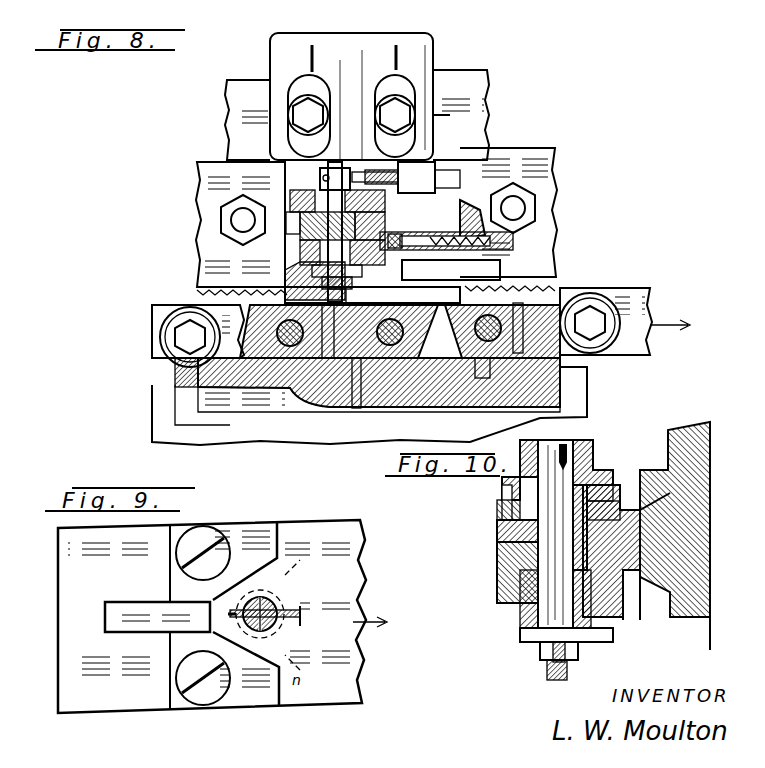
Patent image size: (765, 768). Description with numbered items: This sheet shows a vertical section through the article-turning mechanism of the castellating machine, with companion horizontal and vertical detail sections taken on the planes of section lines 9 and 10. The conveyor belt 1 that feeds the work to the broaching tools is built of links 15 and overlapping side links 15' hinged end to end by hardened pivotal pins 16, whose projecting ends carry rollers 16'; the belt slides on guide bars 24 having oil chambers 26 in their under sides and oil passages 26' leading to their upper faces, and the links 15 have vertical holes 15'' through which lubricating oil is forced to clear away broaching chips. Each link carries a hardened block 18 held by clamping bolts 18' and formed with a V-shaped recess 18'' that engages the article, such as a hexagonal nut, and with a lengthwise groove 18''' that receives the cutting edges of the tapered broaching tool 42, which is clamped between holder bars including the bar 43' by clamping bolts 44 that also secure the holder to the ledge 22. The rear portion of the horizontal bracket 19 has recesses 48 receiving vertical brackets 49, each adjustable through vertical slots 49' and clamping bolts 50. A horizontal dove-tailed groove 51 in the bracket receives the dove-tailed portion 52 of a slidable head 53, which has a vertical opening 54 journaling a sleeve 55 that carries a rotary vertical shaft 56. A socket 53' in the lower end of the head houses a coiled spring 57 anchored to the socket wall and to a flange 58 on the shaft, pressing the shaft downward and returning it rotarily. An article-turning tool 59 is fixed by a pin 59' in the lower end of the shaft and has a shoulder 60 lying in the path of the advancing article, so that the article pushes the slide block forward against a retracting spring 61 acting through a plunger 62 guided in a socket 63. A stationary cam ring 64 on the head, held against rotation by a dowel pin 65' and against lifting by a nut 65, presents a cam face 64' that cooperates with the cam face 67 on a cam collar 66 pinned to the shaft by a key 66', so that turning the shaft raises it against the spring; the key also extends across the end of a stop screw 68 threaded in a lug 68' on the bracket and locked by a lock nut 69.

In FIG. 8, the conveyor belt 1 is at (158, 345).
In FIG. 9, the conveyor belt 1 is at (283, 525).
In FIG. 8, the base casting 9 is at (315, 281).
In FIG. 8, the pin 10 is at (345, 446).
In FIG. 8, the links 15 is at (336, 381).
In FIG. 9, the links 15 is at (212, 629).
In FIG. 8, the links 15' is at (426, 364).
In FIG. 8, the vertical holes 15'' is at (412, 384).
In FIG. 8, the pivotal pins 16 is at (385, 375).
In FIG. 8, the rollers 16' is at (365, 301).
In FIG. 8, the block 18 is at (352, 284).
In FIG. 9, the block 18 is at (218, 633).
In FIG. 9, the clamping bolts 18' is at (204, 617).
In FIG. 8, the V-shaped recess 18'' is at (582, 263).
In FIG. 9, the V-shaped recess 18'' is at (273, 615).
In FIG. 8, the lengthwise groove 18''' is at (528, 271).
In FIG. 9, the lengthwise groove 18''' is at (157, 605).
In FIG. 8, the horizontally extending bracket 19 is at (470, 76).
In FIG. 8, the ledge 22 is at (445, 412).
In FIG. 8, the guide bars 24 is at (385, 345).
In FIG. 8, the oil chambers 26 is at (369, 411).
In FIG. 8, the oil passages 26' is at (301, 409).
In FIG. 8, the broaching tool 42 is at (195, 290).
In FIG. 8, the bar 43' is at (378, 217).
In FIG. 8, the clamping bolts 44 is at (230, 220).
In FIG. 8, the recesses 48 is at (451, 124).
In FIG. 8, the vertical bracket 49 is at (351, 84).
In FIG. 10, the vertical bracket 49 is at (681, 415).
In FIG. 8, the vertical slots 49' is at (351, 102).
In FIG. 8, the clamping bolts 50 is at (390, 112).
In FIG. 8, the dove-tailed groove 51 is at (451, 270).
In FIG. 10, the dove-tailed groove 51 is at (650, 590).
In FIG. 10, the dove-tailed portion 52 is at (660, 540).
In FIG. 8, the head 53 is at (320, 234).
In FIG. 10, the head 53 is at (500, 572).
In FIG. 8, the socket 53' is at (320, 254).
In FIG. 10, the socket 53' is at (495, 633).
In FIG. 10, the vertical opening 54 is at (522, 578).
In FIG. 10, the sleeve 55 is at (525, 535).
In FIG. 8, the rotary vertical shaft 56 is at (320, 172).
In FIG. 9, the rotary vertical shaft 56 is at (278, 605).
In FIG. 10, the rotary vertical shaft 56 is at (560, 620).
In FIG. 8, the coiled spring 57 is at (446, 232).
In FIG. 10, the coiled spring 57 is at (522, 596).
In FIG. 8, the flange 58 is at (339, 274).
In FIG. 10, the flange 58 is at (590, 642).
In FIG. 8, the article-turning tool 59 is at (350, 292).
In FIG. 9, the article-turning tool 59 is at (212, 632).
In FIG. 10, the article-turning tool 59 is at (574, 667).
In FIG. 9, the pin 59' is at (296, 643).
In FIG. 8, the shoulder 60 is at (352, 282).
In FIG. 9, the shoulder 60 is at (300, 616).
In FIG. 10, the shoulder 60 is at (547, 676).
In FIG. 8, the retracting spring 61 is at (468, 234).
In FIG. 8, the plunger 62 is at (418, 228).
In FIG. 8, the socket 63 is at (490, 238).
In FIG. 8, the stationary cam ring 64 is at (288, 197).
In FIG. 10, the stationary cam ring 64 is at (611, 505).
In FIG. 8, the cam face 64' is at (371, 201).
In FIG. 10, the cam face 64' is at (620, 473).
In FIG. 10, the nut 65 is at (598, 505).
In FIG. 10, the dowel pin 65' is at (491, 511).
In FIG. 8, the cam collar 66 is at (338, 253).
In FIG. 10, the cam collar 66 is at (576, 523).
In FIG. 8, the pin 66' is at (375, 164).
In FIG. 10, the pin 66' is at (551, 435).
In FIG. 8, the cam face 67 is at (292, 213).
In FIG. 10, the cam face 67 is at (502, 498).
In FIG. 8, the stop screw 68 is at (461, 160).
In FIG. 8, the threaded apertured lug 68' is at (417, 160).
In FIG. 8, the lock nut 69 is at (447, 186).